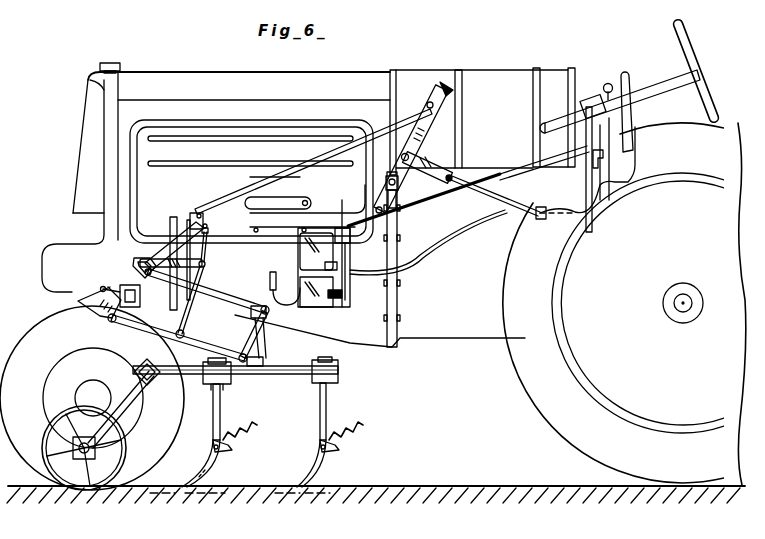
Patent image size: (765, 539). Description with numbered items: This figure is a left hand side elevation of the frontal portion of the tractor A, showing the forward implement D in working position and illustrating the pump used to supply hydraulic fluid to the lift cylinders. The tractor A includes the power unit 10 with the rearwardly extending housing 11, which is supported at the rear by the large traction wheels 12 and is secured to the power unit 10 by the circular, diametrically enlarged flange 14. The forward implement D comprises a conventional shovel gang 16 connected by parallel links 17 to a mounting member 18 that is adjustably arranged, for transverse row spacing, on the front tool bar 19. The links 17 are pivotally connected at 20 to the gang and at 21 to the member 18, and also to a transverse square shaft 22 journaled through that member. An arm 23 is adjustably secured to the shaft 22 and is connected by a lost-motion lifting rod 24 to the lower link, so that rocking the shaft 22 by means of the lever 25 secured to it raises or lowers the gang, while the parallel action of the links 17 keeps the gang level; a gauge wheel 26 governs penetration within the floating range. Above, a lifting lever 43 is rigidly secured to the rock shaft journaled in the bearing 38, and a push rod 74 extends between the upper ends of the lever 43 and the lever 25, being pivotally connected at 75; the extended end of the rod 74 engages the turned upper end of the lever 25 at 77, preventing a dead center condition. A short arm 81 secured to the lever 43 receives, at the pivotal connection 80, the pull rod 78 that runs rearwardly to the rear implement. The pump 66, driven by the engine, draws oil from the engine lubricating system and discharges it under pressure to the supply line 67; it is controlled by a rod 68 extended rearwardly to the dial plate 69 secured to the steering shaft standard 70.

The power unit 10 is at (294, 199).
The rearwardly extending housing 11 is at (441, 346).
The traction wheels 12 is at (503, 398).
The circular, diametrically enlarged flange 14 is at (398, 298).
The shovel gangs 16 is at (273, 382).
The parallel links 17 is at (236, 312).
The mounting members 18 is at (122, 278).
The front tool bars 19 is at (100, 299).
The pivotal connection to gangs 20 is at (269, 315).
The pivotal connection to mounting members 21 is at (119, 307).
The transverse square shafts 22 is at (133, 262).
The arms 23 is at (205, 264).
The lost-motion lifting rods 24 is at (208, 255).
The levers 25 is at (180, 230).
The gauge wheels 26 is at (128, 448).
The bearing 38 is at (399, 198).
The lifting levers 43 is at (437, 136).
The pump 66 is at (298, 250).
The supply line 67 is at (423, 250).
The rod 68 is at (444, 203).
The dial plate 69 is at (603, 145).
The steering shaft standard 70 is at (618, 182).
The push rods 74 is at (262, 183).
The pivot connections 75 is at (199, 216).
The engagement of rod with lever end 77 is at (452, 80).
The pull rods 78 is at (500, 200).
The pivotal connection 80 is at (454, 178).
The short arms 81 is at (443, 166).
The tractor A is at (66, 188).
The forward implement D is at (353, 389).